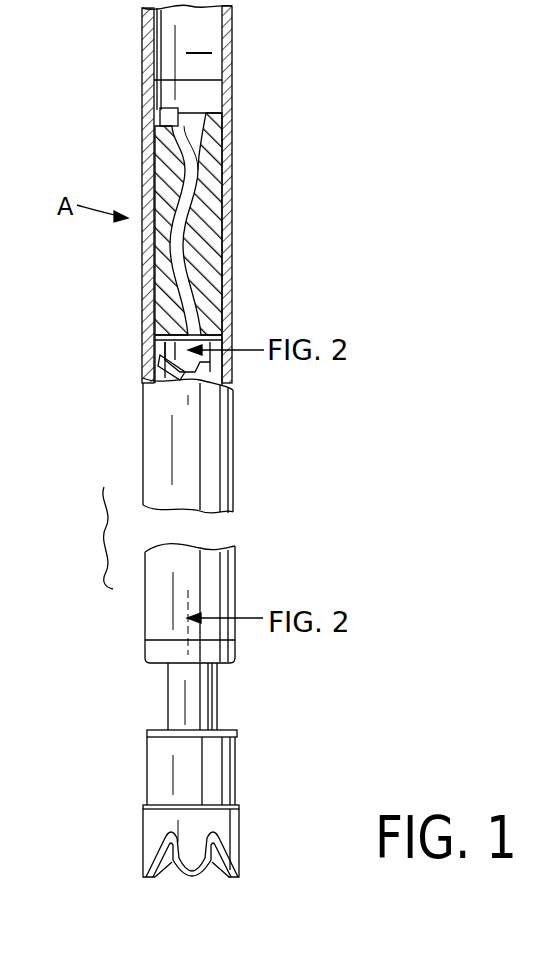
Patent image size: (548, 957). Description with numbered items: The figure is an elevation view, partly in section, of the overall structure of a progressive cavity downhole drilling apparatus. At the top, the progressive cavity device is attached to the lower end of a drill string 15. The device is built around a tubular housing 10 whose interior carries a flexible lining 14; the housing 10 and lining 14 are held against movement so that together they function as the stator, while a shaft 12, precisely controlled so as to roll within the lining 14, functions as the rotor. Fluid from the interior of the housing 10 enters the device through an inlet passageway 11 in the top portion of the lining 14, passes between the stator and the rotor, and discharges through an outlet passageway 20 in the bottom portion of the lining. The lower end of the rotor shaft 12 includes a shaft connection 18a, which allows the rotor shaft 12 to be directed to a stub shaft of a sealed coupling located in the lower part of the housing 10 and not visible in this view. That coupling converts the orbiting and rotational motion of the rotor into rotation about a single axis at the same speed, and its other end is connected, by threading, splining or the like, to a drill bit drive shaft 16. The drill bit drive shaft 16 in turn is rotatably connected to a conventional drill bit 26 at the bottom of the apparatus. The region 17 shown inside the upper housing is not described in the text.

The housing 10 is at (143, 86).
The passageway (inlet) 11 is at (205, 134).
The shaft 12 is at (160, 122).
The flexible lining 14 is at (232, 170).
The drill string 15 is at (142, 12).
The drill bit drive shaft 16 is at (218, 702).
The chamber 17 is at (188, 62).
The shaft connection 18a is at (143, 368).
The passageway (outlet) 20 is at (228, 333).
The drill bit 26 is at (221, 872).